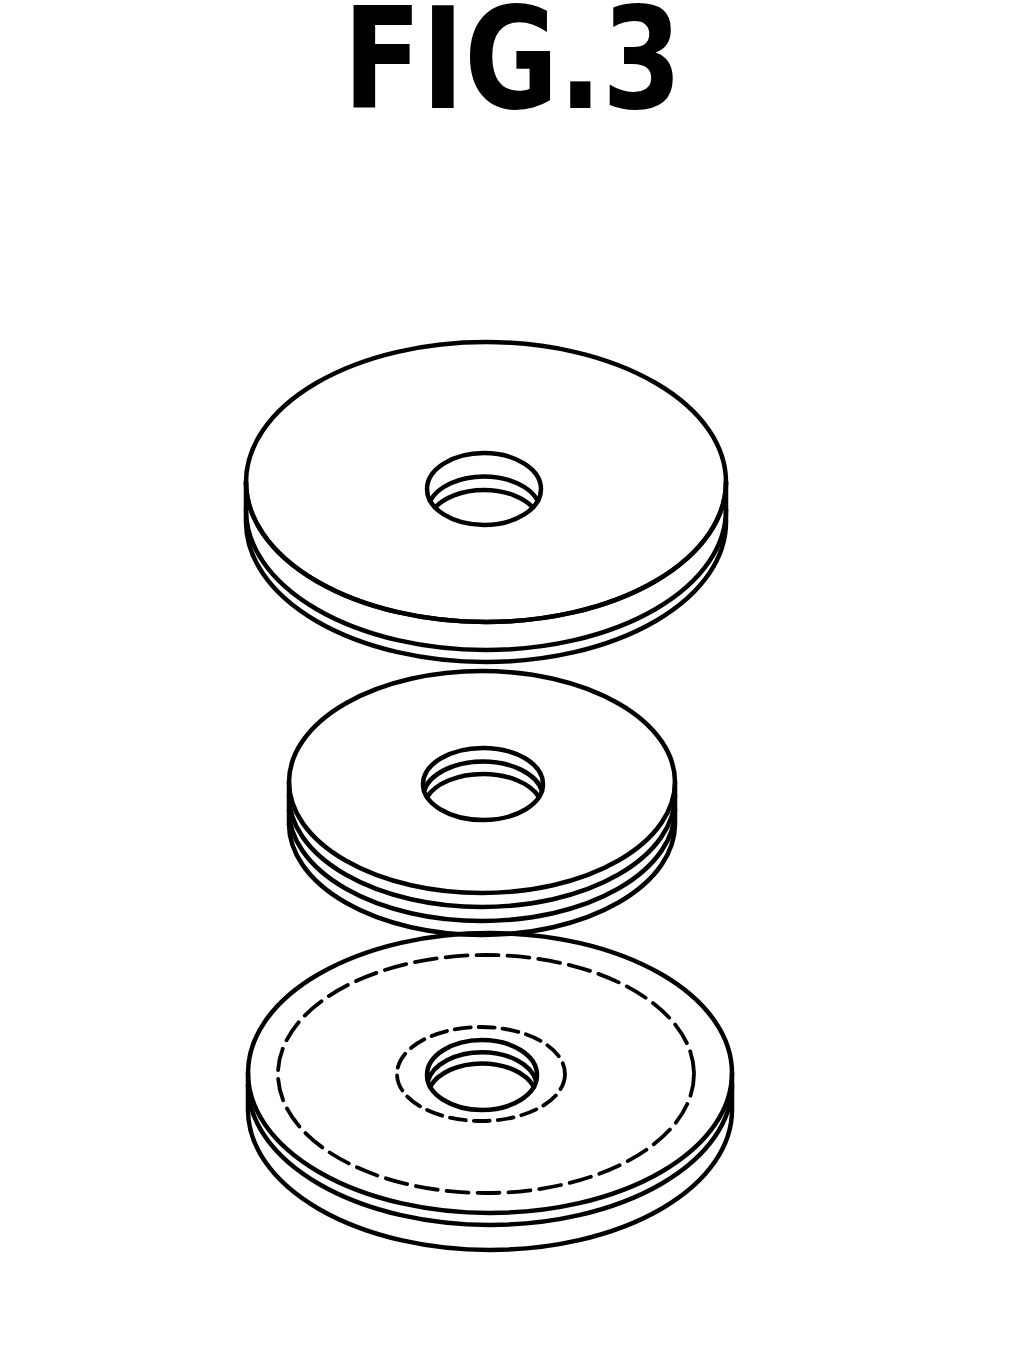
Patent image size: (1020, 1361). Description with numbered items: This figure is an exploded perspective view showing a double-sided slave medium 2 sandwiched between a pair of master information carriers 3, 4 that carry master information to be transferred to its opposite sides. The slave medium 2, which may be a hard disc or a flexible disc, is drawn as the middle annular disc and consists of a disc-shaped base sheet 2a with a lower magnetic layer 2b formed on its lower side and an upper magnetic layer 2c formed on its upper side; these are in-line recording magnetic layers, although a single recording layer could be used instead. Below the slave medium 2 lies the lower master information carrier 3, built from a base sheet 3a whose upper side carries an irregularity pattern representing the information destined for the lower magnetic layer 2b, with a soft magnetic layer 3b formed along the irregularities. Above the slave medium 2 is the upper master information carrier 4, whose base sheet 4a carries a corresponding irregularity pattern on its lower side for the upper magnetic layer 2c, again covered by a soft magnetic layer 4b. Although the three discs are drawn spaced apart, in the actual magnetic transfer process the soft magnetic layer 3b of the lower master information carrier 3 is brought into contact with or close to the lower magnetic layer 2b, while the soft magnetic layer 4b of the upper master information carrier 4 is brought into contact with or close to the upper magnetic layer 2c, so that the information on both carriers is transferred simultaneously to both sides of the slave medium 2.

The slave medium 2 is at (451, 803).
The base sheet 2a is at (298, 850).
The lower magnetic layer 2b is at (313, 877).
The upper magnetic layer 2c is at (295, 824).
The lower master information carrier 3 is at (475, 1091).
The base sheet 3a is at (268, 1160).
The soft magnetic layer 3b is at (257, 1123).
The upper master information carrier 4 is at (471, 502).
The base sheet 4a is at (246, 522).
The soft magnetic layer 4b is at (268, 570).